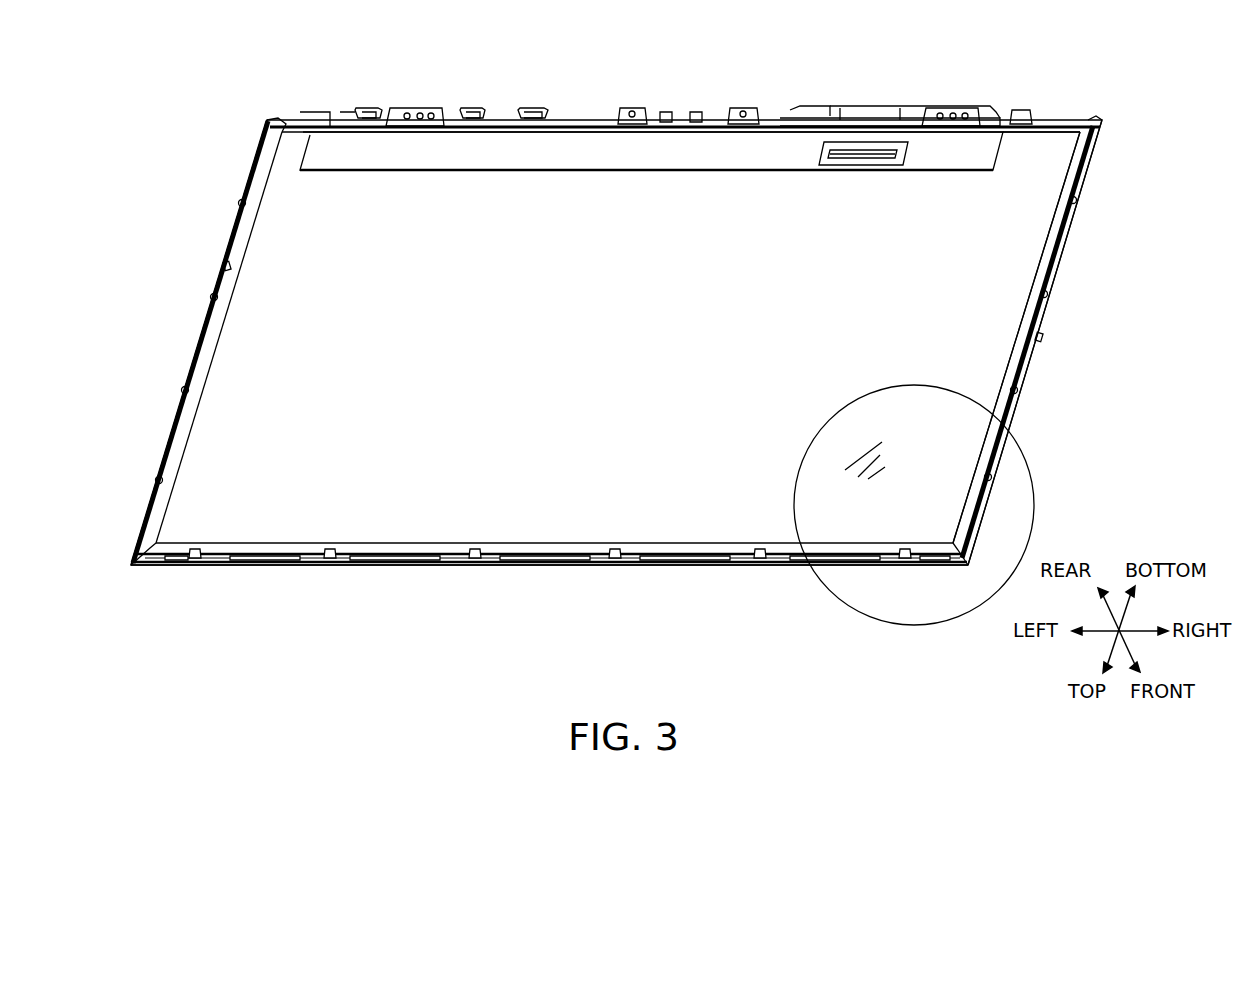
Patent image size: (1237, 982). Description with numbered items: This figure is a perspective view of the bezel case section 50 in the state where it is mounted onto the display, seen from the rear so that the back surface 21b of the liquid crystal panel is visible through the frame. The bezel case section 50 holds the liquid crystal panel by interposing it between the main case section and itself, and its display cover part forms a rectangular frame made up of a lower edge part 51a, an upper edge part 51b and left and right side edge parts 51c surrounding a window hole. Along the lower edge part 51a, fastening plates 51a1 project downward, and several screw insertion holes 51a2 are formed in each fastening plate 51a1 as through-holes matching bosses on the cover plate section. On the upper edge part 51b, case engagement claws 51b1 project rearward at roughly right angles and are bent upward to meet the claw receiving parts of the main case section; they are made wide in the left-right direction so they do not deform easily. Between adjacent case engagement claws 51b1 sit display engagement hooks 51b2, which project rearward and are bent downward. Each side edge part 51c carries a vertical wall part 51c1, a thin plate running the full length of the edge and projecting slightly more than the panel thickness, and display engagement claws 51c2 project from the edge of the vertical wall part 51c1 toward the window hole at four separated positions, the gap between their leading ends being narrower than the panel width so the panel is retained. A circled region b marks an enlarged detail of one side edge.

The bezel case section 50 is at (131, 557).
The lower edge part 51a is at (1050, 122).
The fastening plate 51a1 is at (447, 110).
The screw insertion hole 51a2 is at (422, 110).
The back surface 21b is at (1057, 152).
The side edge part 51c is at (211, 271).
The vertical wall part 51c1 is at (1075, 225).
The display engagement claw 51c2 is at (245, 202).
The upper edge part 51b is at (648, 566).
The case engagement claw 51b1 is at (148, 566).
The display engagement hook 51b2 is at (195, 548).
The enlarged region b is at (1035, 493).